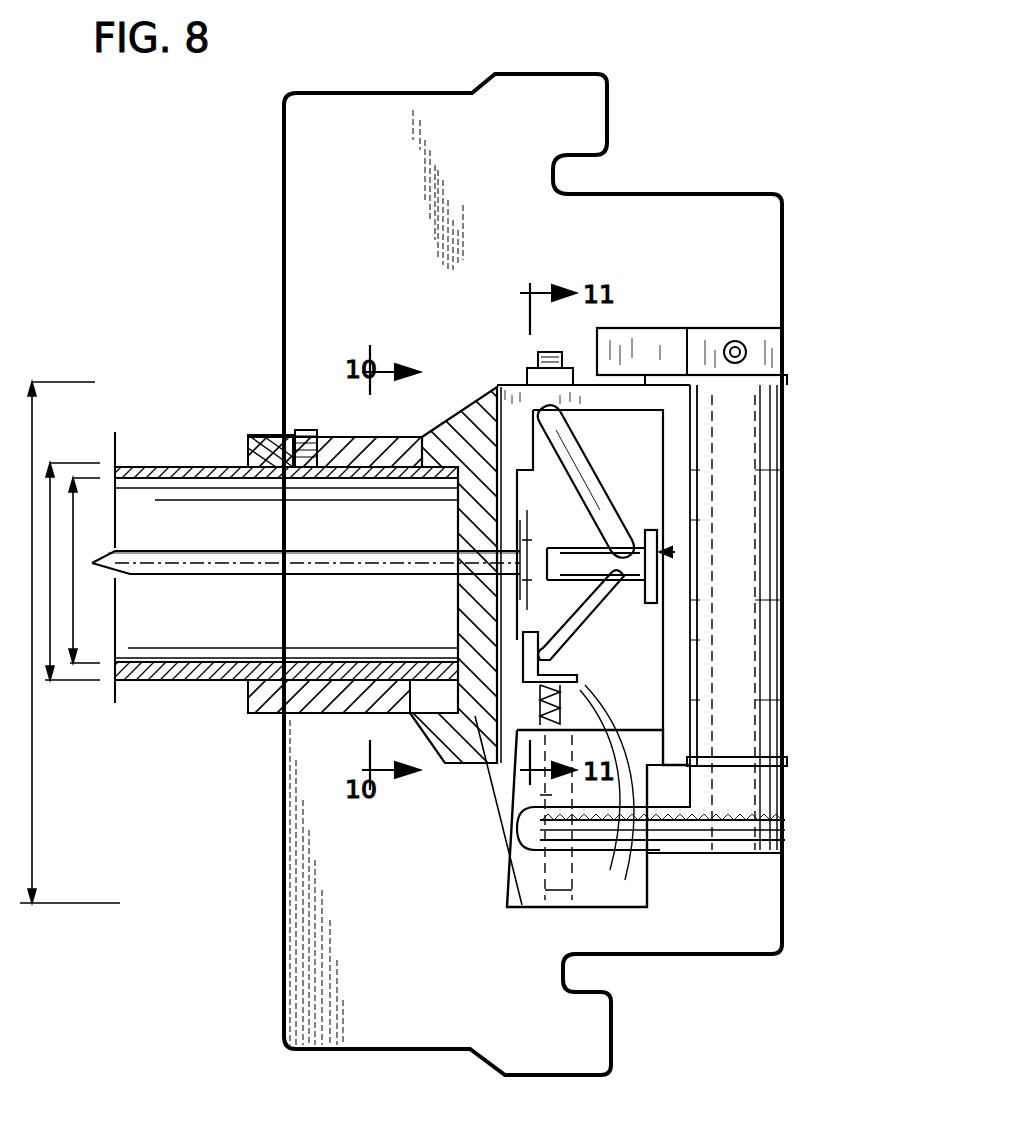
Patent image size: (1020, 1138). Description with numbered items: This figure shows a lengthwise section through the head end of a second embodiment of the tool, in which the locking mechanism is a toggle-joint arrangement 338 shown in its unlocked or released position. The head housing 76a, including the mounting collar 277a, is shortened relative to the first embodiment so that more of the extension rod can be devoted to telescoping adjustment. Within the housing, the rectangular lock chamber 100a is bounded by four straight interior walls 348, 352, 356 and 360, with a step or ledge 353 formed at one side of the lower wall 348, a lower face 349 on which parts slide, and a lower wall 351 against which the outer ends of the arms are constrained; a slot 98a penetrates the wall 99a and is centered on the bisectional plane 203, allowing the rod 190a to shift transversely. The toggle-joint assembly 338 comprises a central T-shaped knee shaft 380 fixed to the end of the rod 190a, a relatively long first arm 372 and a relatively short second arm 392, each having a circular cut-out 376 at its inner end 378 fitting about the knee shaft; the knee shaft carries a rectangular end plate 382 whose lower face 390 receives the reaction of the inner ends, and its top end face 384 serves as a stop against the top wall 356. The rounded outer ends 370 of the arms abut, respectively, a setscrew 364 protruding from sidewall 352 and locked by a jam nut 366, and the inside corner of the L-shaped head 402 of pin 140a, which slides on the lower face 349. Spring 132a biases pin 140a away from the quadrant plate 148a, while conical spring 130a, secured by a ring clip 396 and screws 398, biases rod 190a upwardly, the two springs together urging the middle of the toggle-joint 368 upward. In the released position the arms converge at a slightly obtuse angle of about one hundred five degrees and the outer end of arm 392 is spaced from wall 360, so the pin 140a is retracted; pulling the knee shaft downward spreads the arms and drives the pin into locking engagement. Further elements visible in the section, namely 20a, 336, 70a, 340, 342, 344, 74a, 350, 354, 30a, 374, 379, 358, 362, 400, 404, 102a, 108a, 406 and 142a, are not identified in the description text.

The housing body 20a is at (770, 245).
The connector assembly 336 is at (222, 155).
The plug 70a is at (170, 250).
The overall length dimension 340 is at (32, 745).
The tube outer dimension 342 is at (50, 690).
The tube inner dimension 344 is at (73, 672).
The tube 74a is at (170, 460).
The mounting collar 277a is at (248, 438).
The rod 190a is at (192, 572).
The bisectional plane 203 is at (232, 565).
The head housing 76a is at (482, 412).
The wall 99a is at (485, 690).
The housing 350 is at (545, 398).
The setscrew 364 is at (538, 360).
The jam nut 366 is at (538, 380).
The outer ends of arms 370 is at (552, 415).
The lock chamber 100a is at (603, 420).
The sidewall of lock chamber 352 is at (613, 410).
The bracket leg 354 is at (653, 410).
The panel 30a is at (738, 400).
The first arm 372 is at (600, 470).
The lower face of end plate 390 is at (625, 650).
The circular cut-outs 376 is at (615, 535).
The rectangular end plate 382 is at (675, 552).
The screws 398 is at (722, 405).
The ring clip 396 is at (640, 478).
The pivot 379 is at (625, 505).
The arm 374 is at (640, 540).
The toggle-joint assembly 338 is at (660, 565).
The toggle-joint middle 368 is at (655, 585).
The knee shaft 380 is at (648, 605).
The top end face of knee shaft 384 is at (640, 620).
The inner ends of arms 378 is at (615, 700).
The second arm 392 is at (655, 718).
The top wall of lock chamber 356 is at (700, 765).
The bracket 358 is at (748, 772).
The wall of lock chamber 360 is at (740, 792).
The L bracket 400 is at (530, 690).
The spring 404 is at (540, 705).
The spring 132a is at (560, 730).
The arc path 362 is at (580, 790).
The pin 140a is at (600, 820).
The lower housing 102a is at (527, 872).
The serrated plate 108a is at (785, 838).
The quadrant plate 148a is at (782, 853).
The L-shaped head 402 is at (648, 858).
The plate 406 is at (648, 875).
The plate 142a is at (647, 905).
The ledge 353 is at (455, 485).
The lower wall 351 is at (480, 505).
The slot 98a is at (520, 540).
The spring 130a is at (500, 600).
The lower wall of lock chamber 348 is at (510, 622).
The lower face of chamber 349 is at (520, 642).